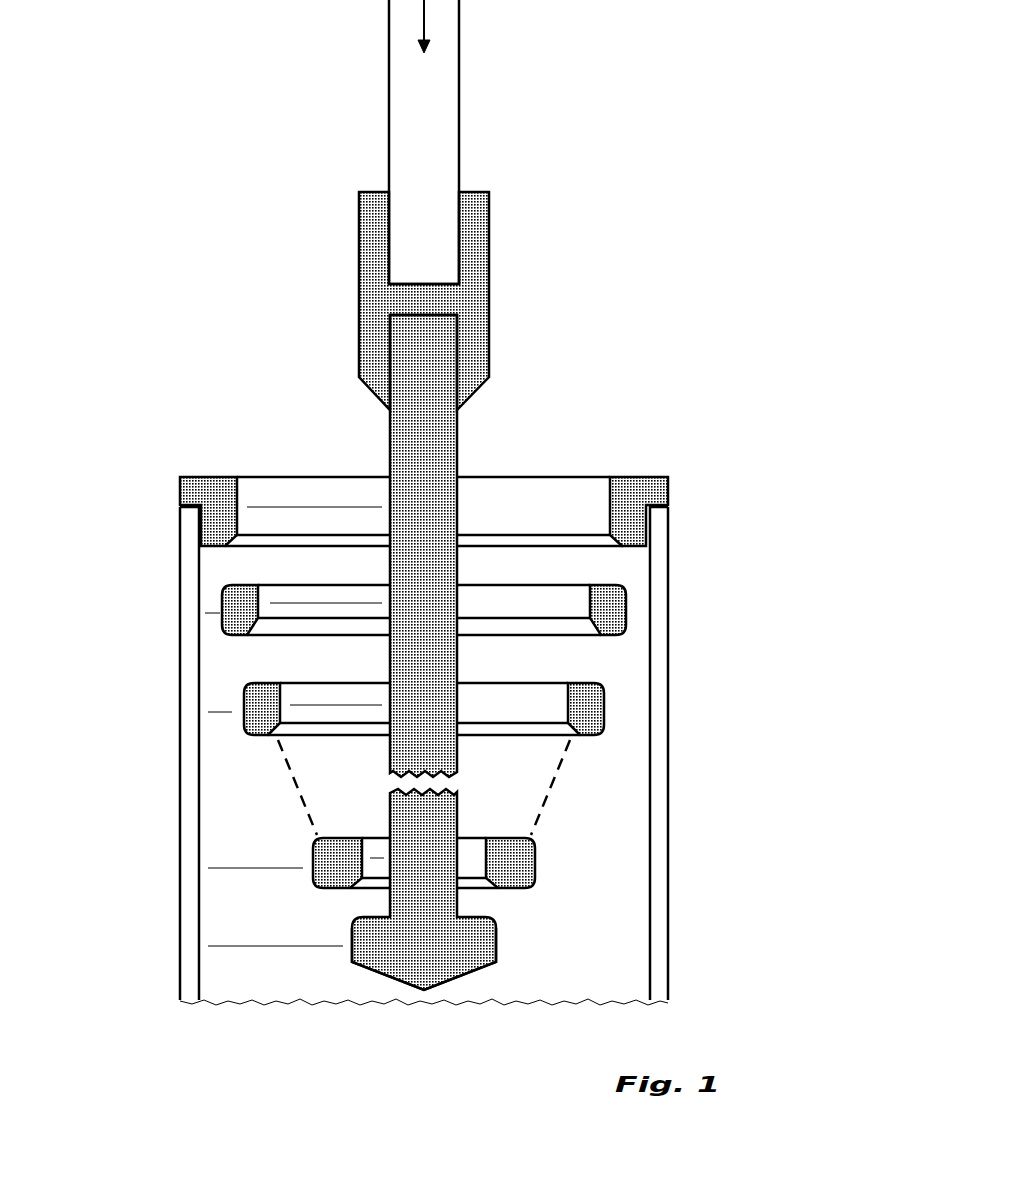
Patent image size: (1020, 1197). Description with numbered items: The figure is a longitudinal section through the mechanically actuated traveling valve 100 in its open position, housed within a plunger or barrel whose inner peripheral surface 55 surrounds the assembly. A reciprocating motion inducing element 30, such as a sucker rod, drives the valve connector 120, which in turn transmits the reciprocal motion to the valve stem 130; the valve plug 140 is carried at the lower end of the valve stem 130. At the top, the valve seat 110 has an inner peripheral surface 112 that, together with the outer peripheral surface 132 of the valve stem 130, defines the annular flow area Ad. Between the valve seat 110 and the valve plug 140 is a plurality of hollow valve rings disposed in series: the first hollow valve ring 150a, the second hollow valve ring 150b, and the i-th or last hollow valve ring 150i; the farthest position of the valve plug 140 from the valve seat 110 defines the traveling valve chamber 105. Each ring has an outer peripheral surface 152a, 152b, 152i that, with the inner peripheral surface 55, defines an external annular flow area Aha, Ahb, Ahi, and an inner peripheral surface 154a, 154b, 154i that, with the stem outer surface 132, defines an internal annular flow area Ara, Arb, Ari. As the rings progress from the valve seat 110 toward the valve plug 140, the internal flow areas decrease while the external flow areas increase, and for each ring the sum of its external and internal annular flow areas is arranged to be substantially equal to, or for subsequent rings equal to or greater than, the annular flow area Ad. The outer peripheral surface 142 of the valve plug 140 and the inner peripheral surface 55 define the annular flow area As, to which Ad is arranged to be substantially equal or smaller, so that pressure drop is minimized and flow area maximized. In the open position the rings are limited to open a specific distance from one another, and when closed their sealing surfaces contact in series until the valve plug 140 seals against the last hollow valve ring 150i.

The reciprocating motion inducing element 30 is at (443, 157).
The valve connector 120 is at (471, 301).
The mechanically actuated traveling valve 100 is at (423, 495).
The outer peripheral surface of valve stem 132 is at (389, 434).
The valve stem 130 is at (442, 434).
The inner peripheral surface of valve seat 112 is at (610, 503).
The valve seat 110 is at (633, 491).
The annular flow area of valve seat Ad is at (315, 507).
The internal annular flow area of first hollow valve ring Ara is at (327, 603).
The outer peripheral surface of first hollow valve ring 152a is at (222, 602).
The external annular flow area of first hollow valve ring Aha is at (212, 614).
The inner peripheral surface of first hollow valve ring 154a is at (590, 603).
The first hollow valve ring 150a is at (600, 612).
The internal annular flow area of second hollow valve ring Arb is at (335, 705).
The outer peripheral surface of second hollow valve ring 152b is at (244, 702).
The external annular flow area of second hollow valve ring Ahb is at (218, 714).
The inner peripheral surface of second hollow valve ring 154b is at (567, 707).
The second hollow valve ring 150b is at (588, 712).
The traveling valve chamber 105 is at (450, 787).
The internal annular flow area of last hollow valve ring Ari is at (377, 858).
The outer peripheral surface of last hollow valve ring 152i is at (313, 857).
The external annular flow area of last hollow valve ring Ahi is at (260, 870).
The inner peripheral surface of last hollow valve ring 154i is at (485, 858).
The last hollow valve ring 150i is at (520, 865).
The inner peripheral surface of plunger or barrel 55 is at (647, 923).
The outer peripheral surface of valve plug 142 is at (343, 936).
The annular flow area of valve plug As is at (278, 950).
The valve plug 140 is at (470, 942).